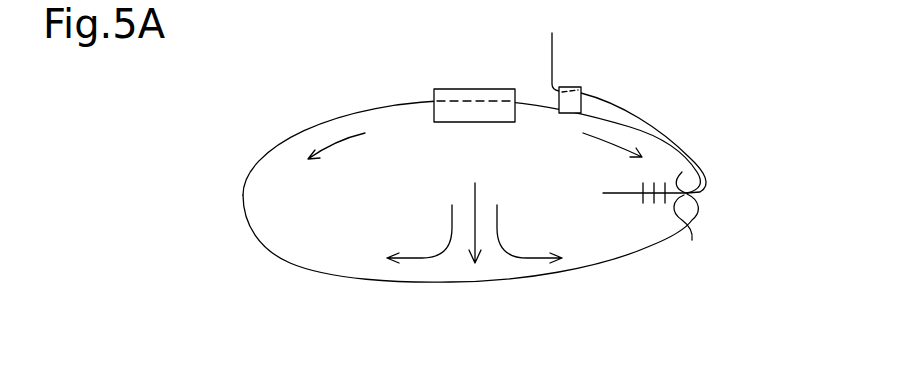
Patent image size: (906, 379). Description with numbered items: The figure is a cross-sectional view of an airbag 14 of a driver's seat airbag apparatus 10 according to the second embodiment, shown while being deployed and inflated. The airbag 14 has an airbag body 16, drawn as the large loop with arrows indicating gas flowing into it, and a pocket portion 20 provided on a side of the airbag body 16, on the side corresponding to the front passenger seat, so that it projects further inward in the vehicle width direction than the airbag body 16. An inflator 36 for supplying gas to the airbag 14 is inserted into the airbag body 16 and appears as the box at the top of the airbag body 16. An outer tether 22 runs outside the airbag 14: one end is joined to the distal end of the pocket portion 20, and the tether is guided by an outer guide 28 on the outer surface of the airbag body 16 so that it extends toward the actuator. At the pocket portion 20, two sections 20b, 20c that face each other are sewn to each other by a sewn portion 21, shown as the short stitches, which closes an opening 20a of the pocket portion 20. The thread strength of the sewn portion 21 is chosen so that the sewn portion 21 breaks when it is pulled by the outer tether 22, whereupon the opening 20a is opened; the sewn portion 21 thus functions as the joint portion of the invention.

The driver's seat airbag apparatus 10 is at (233, 273).
The airbag 14 is at (667, 303).
The airbag body 16 is at (532, 281).
The pocket portion 20 is at (633, 197).
The opening 20a is at (716, 200).
The section of the pocket portion 20b is at (682, 172).
The section of the pocket portion 20c is at (692, 240).
The sewn portion 21 is at (668, 182).
The outer tether 22 is at (630, 110).
The outer guide 28 is at (573, 87).
The inflator 36 is at (450, 89).